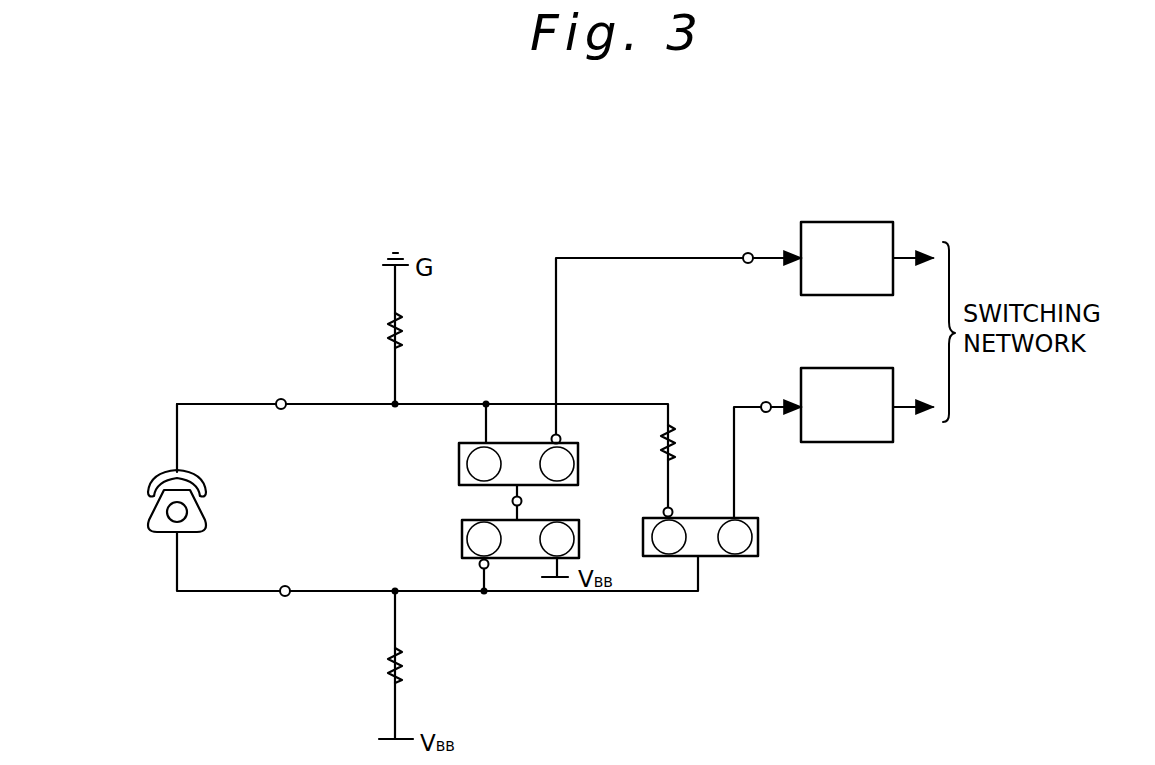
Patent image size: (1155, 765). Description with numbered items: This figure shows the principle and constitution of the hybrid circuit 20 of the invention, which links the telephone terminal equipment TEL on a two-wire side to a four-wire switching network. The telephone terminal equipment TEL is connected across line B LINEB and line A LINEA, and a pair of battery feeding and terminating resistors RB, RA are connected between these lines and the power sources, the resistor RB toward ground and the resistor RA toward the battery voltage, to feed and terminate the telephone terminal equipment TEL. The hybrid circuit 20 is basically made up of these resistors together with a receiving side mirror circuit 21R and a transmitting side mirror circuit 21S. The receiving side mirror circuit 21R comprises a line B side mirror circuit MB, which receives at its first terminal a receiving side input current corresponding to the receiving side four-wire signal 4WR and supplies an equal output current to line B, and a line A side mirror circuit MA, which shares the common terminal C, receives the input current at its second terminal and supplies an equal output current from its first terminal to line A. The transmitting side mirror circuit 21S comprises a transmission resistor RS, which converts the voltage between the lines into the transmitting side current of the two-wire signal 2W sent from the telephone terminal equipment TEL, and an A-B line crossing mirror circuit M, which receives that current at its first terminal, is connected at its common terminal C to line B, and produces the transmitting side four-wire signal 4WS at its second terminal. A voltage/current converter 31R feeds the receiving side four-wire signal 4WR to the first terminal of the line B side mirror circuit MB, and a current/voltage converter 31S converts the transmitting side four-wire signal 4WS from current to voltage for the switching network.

The hybrid circuit 20 is at (500, 252).
The receiving side mirror circuit 21R is at (432, 496).
The transmitting side mirror circuit 21S is at (726, 457).
The voltage/current converter 31R is at (858, 222).
The current/voltage converter 31S is at (872, 442).
The receiving side four-wire signal 4WR is at (677, 232).
The transmitting side four-wire signal 4WS is at (792, 380).
The two-wire signal 2W is at (435, 480).
The telephone terminal equipment TEL is at (151, 515).
The battery feeding and terminating resistor RB is at (391, 325).
The battery feeding and terminating resistor RA is at (392, 676).
The transmission resistor RS is at (661, 447).
The line B side mirror circuit MB is at (577, 460).
The line A side mirror circuit MA is at (462, 538).
The A-B line crossing mirror circuit M is at (759, 537).
The common terminal C is at (522, 502).
The line A LINEA is at (238, 591).
The line B LINEB is at (234, 404).